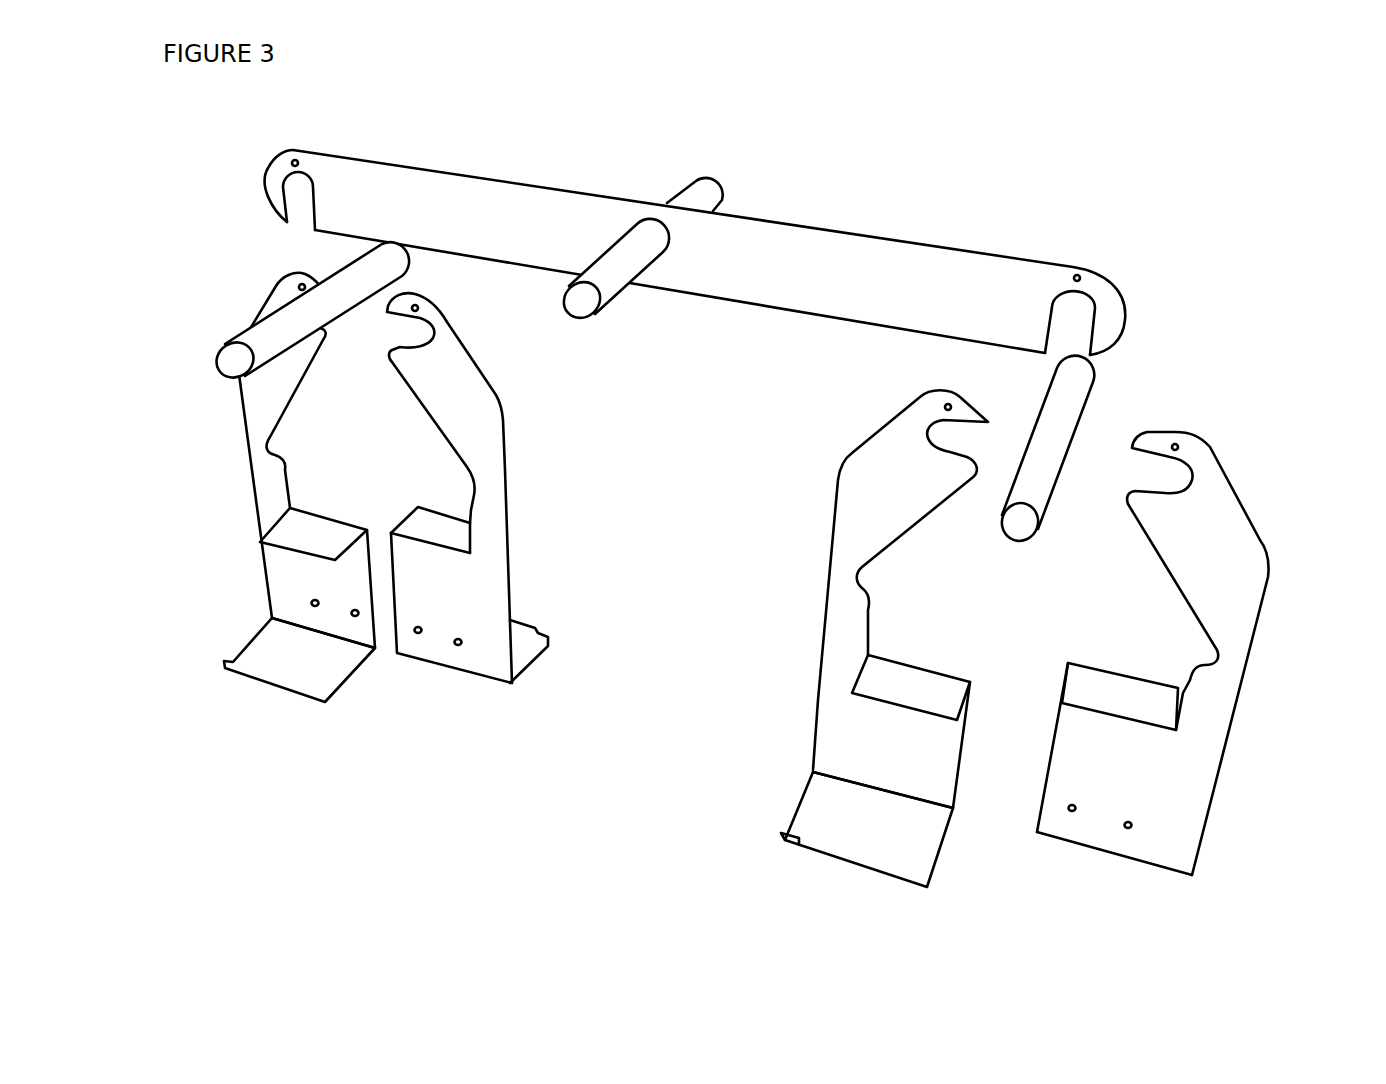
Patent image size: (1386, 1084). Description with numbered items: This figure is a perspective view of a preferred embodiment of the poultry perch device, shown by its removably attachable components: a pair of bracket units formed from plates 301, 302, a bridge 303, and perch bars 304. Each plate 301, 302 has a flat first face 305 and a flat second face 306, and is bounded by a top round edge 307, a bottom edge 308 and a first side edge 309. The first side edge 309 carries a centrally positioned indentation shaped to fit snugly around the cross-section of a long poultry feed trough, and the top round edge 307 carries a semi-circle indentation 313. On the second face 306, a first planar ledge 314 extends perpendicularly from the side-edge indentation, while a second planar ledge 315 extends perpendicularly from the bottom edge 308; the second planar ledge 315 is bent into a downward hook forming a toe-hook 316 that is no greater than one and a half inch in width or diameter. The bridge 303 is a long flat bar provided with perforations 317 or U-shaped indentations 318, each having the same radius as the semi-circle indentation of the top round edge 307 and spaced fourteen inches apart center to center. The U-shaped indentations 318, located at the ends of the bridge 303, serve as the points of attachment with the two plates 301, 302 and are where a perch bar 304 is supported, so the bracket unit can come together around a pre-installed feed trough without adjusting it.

The plate 301 is at (285, 718).
The plate 302 is at (462, 705).
The bridge 303 is at (695, 220).
The perch bar 304 is at (1055, 413).
The first face 305 is at (463, 603).
The second face 306 is at (262, 473).
The top round edge 307 is at (904, 641).
The bottom edge 308 is at (942, 807).
The first side edge 309 is at (1160, 627).
The semi-circle indentation 313 is at (1142, 467).
The first planar ledge 314 is at (290, 542).
The second planar ledge 315 is at (272, 668).
The toe-hook 316 is at (548, 637).
The perforation 317 is at (650, 223).
The U-shaped indentation 318 is at (300, 190).